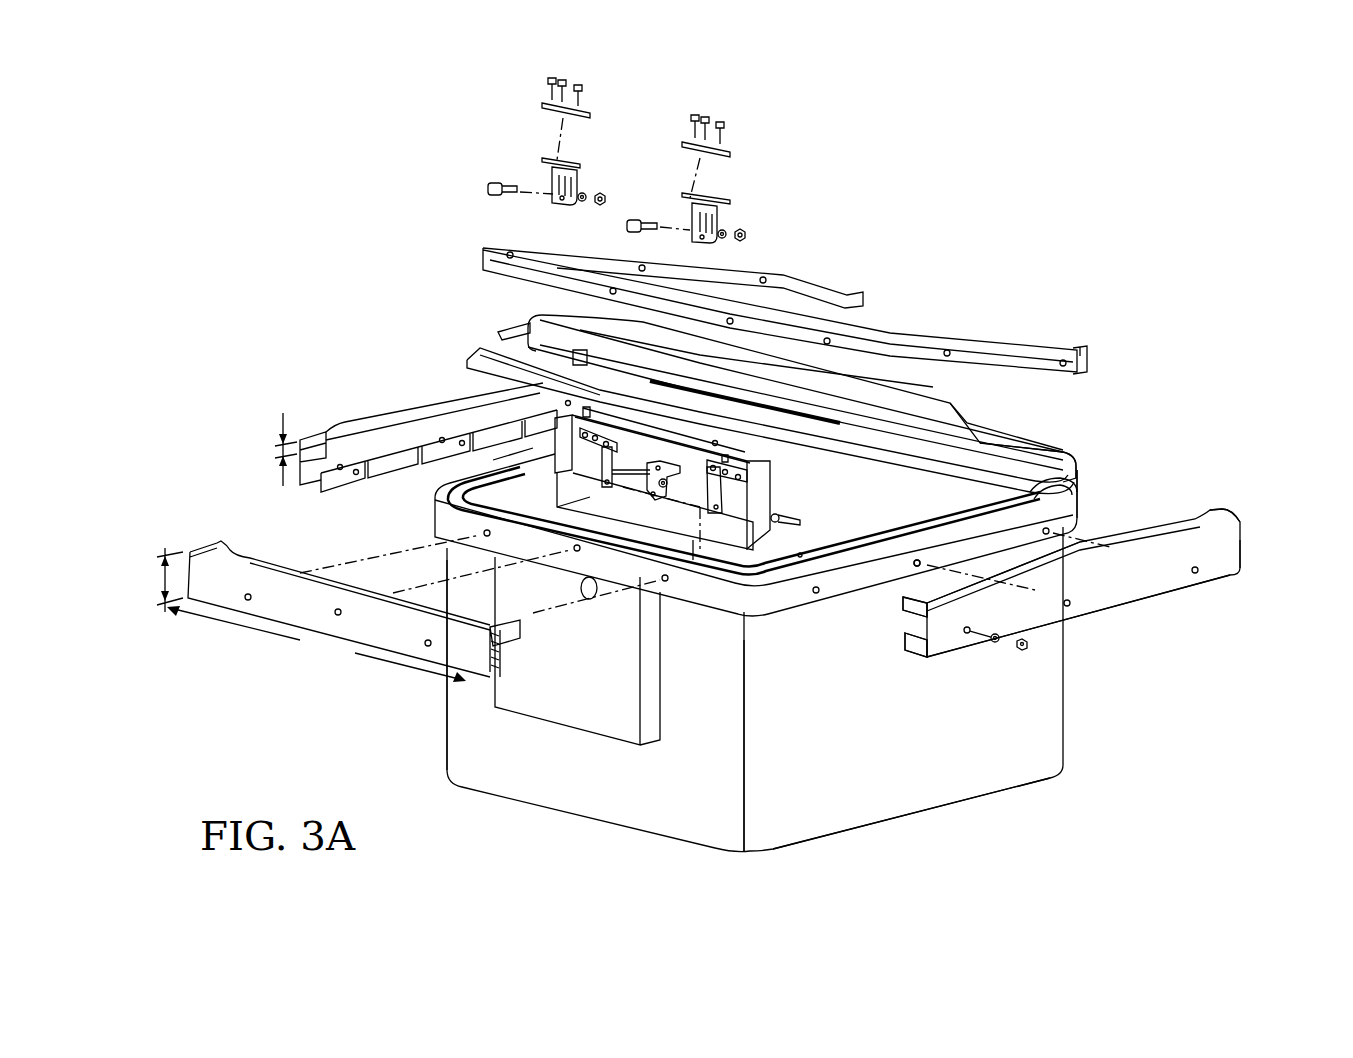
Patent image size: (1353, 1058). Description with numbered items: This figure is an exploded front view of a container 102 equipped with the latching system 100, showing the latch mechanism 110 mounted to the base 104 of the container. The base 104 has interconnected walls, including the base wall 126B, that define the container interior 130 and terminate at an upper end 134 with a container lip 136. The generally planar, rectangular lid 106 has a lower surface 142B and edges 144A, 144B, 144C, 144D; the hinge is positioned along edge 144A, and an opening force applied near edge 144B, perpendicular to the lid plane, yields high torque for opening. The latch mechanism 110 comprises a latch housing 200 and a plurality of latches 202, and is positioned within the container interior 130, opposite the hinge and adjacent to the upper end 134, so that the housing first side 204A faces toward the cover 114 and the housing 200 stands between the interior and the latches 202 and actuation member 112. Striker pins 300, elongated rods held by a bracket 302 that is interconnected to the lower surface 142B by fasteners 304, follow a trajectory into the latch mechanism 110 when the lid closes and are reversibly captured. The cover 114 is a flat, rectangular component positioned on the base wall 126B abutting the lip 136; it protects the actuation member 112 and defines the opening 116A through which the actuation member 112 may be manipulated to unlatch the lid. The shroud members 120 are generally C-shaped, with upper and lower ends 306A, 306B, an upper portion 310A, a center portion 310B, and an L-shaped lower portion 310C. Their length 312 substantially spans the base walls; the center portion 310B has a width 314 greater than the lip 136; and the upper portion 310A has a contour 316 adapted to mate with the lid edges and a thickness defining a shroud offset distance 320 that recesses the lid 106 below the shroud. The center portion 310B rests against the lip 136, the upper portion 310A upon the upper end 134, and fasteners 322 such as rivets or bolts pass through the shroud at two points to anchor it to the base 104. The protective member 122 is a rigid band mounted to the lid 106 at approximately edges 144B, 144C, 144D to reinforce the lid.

The latching system 100 is at (1110, 288).
The container 102 is at (1064, 680).
The base 104 is at (903, 817).
The lid 106 is at (885, 397).
The latch mechanism 110 is at (768, 500).
The actuation member 112 is at (650, 497).
The cover 114 is at (598, 698).
The opening 116A is at (586, 600).
The shroud member 120 is at (318, 612).
The protective member 122 is at (1087, 365).
The base wall 126B is at (700, 797).
The container interior 130 is at (900, 509).
The upper end of the container base 134 is at (1103, 508).
The container lip 136 is at (777, 592).
The lower surface 142B is at (1062, 490).
The lid edge 144A is at (1075, 465).
The lid edge 144B is at (500, 400).
The lid edge 144C is at (1040, 485).
The lid edge 144D is at (472, 358).
The latch housing 200 is at (580, 468).
The latches 202 is at (747, 458).
The first side of the latch housing 204A is at (587, 498).
The striker pins 300 is at (487, 189).
The bracket 302 is at (555, 160).
The fasteners 304 is at (722, 125).
The upper end of the shroud 306A is at (1255, 503).
The lower end of the shroud 306B is at (1246, 588).
The upper portion of the shroud 310A is at (1237, 515).
The center portion of the shroud 310B is at (1142, 591).
The lower portion of the shroud 310C is at (910, 652).
The length of the shroud 312 is at (316, 644).
The width of the center portion 314 is at (165, 580).
The contour 316 is at (968, 598).
The shroud offset distance 320 is at (283, 437).
The fasteners 322 is at (1022, 652).